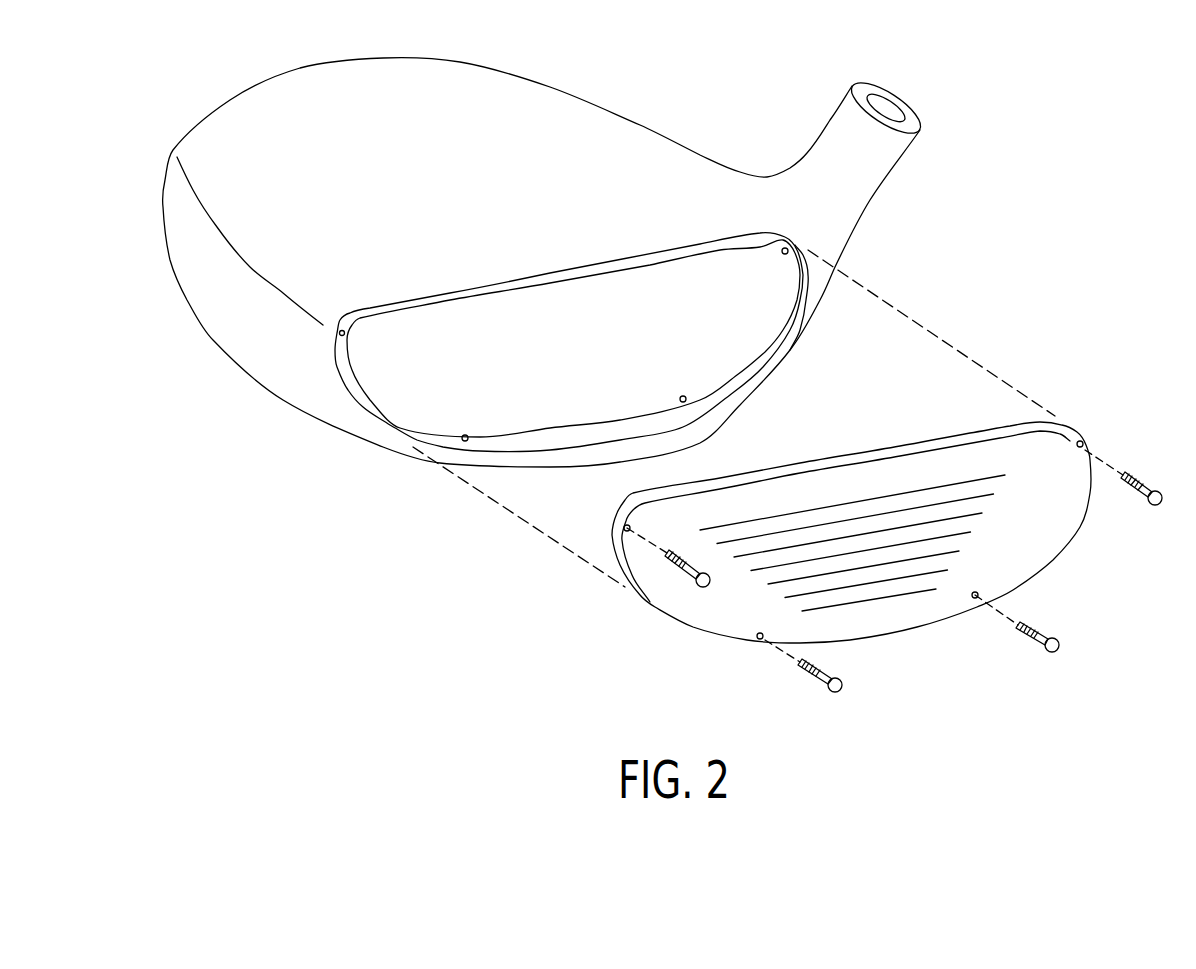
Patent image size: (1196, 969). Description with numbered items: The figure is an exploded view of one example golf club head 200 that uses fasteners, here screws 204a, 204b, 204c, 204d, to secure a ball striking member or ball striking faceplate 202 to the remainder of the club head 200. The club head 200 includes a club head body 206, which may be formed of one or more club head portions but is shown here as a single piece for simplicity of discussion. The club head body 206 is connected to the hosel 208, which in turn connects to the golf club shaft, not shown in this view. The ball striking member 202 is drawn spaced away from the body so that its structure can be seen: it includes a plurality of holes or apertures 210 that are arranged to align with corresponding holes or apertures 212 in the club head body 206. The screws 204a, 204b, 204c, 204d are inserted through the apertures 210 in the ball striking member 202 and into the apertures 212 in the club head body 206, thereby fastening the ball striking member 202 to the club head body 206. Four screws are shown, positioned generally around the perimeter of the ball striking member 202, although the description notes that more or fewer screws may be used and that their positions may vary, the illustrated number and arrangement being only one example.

The golf club head 200 is at (1069, 147).
The ball striking faceplate 202 is at (867, 475).
The screw 204a is at (680, 582).
The screw 204b is at (1143, 477).
The screw 204c is at (1038, 627).
The screw 204d is at (823, 665).
The club head body 206 is at (610, 130).
The hosel 208 is at (835, 143).
The apertures 210 is at (627, 528).
The apertures 212 is at (780, 253).